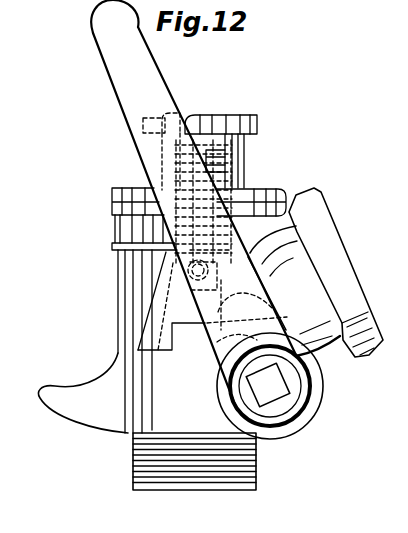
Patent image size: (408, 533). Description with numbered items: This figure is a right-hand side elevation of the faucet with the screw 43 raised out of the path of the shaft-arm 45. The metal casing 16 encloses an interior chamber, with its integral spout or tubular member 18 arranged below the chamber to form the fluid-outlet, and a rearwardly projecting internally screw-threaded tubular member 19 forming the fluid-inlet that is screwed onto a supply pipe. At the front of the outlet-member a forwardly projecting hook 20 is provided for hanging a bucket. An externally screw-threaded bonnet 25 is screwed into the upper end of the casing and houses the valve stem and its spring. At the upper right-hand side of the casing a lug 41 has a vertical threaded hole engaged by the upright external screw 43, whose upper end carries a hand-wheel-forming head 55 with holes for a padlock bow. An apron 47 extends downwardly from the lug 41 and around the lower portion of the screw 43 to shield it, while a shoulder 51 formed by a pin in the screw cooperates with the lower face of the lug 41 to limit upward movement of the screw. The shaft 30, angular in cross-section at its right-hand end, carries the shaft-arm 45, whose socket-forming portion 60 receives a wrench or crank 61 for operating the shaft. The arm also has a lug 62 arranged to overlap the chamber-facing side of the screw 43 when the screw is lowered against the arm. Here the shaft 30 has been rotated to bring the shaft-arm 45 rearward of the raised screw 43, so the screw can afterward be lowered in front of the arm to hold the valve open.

The casing 16 is at (118, 313).
The spout or tubular member 18 is at (133, 461).
The internally screw-threaded tubular member 19 is at (342, 268).
The hook 20 is at (48, 380).
The bonnet 25 is at (238, 152).
The shaft 30 is at (278, 385).
The lug 41 is at (158, 257).
The screw 43 is at (227, 168).
The shaft-arm 45 is at (220, 336).
The apron 47 is at (157, 295).
The shoulder 51 is at (260, 276).
The hand-wheel-forming head 55 is at (256, 125).
The socket-forming portion 60 is at (298, 418).
The wrench or crank 61 is at (110, 85).
The lug 62 is at (271, 316).